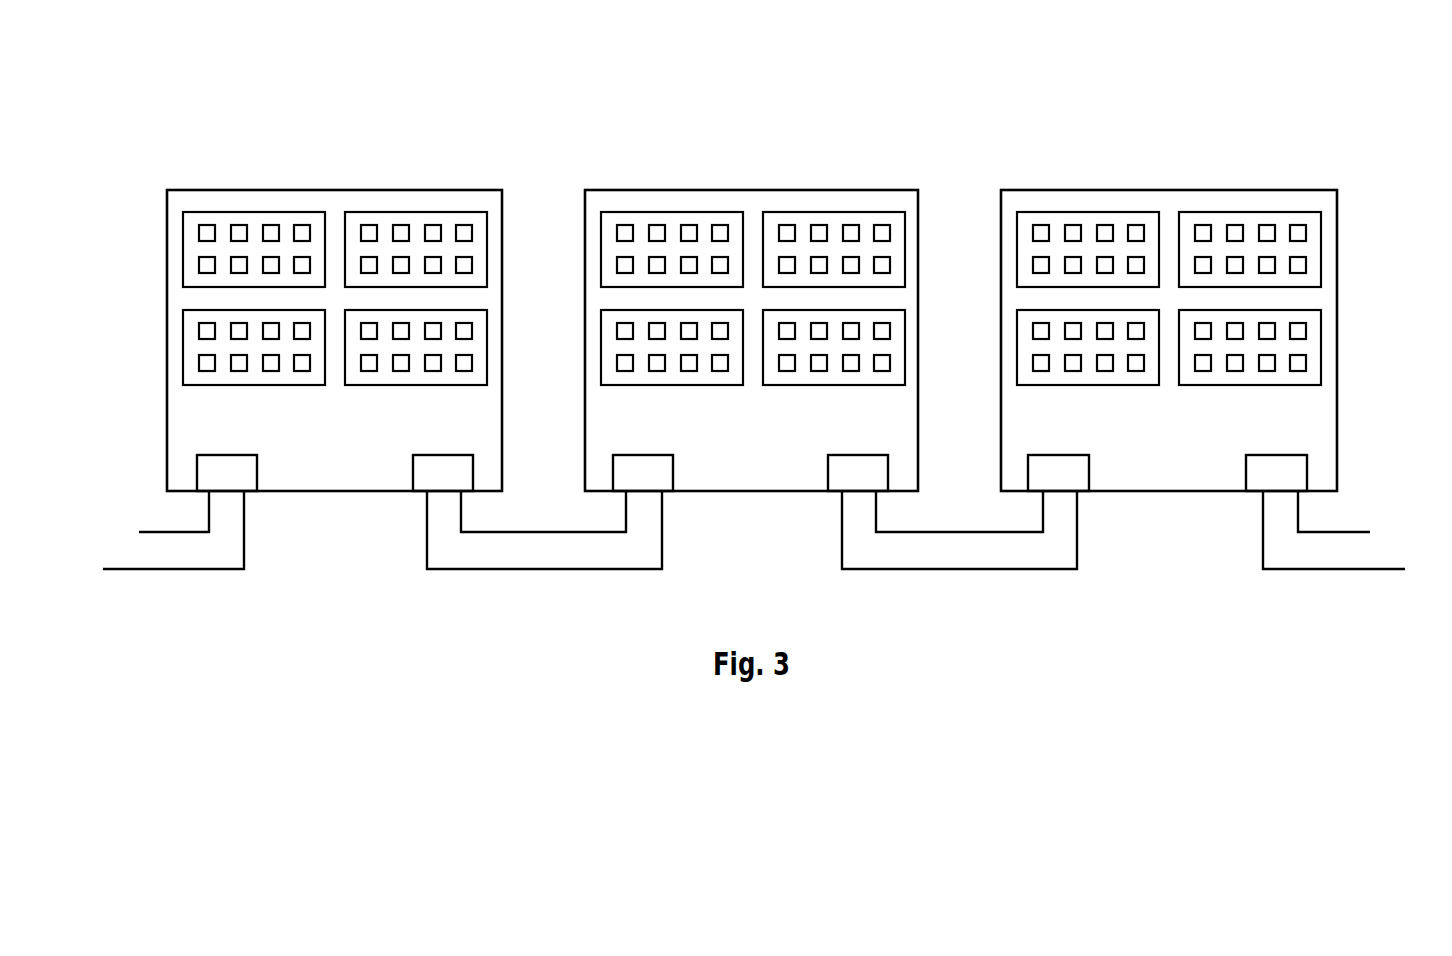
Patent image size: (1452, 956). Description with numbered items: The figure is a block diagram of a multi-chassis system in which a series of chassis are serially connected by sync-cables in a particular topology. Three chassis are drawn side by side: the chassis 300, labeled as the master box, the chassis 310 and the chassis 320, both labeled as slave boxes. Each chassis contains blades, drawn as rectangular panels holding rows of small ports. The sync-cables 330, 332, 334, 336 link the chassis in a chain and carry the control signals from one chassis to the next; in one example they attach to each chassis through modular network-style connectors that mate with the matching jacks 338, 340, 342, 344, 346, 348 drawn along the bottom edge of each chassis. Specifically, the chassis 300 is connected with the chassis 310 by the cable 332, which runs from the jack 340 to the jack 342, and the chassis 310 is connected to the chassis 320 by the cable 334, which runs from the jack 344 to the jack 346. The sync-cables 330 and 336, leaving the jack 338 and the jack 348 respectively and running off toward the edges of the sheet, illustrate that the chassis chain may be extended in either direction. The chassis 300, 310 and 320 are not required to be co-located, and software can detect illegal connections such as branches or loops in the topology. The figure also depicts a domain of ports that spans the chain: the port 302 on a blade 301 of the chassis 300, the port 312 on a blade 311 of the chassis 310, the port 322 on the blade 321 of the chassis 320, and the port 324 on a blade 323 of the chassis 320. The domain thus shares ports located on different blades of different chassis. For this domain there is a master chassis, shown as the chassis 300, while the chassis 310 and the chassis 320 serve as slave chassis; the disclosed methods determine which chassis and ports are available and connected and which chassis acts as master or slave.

The chassis 300 is at (215, 190).
The blade 301 is at (243, 385).
The port 302 is at (237, 371).
The chassis 310 is at (605, 190).
The blade 311 is at (683, 212).
The port 312 is at (650, 226).
The chassis 320 is at (1047, 190).
The blade 321 is at (1258, 212).
The port 322 is at (1233, 226).
The blade 323 is at (1307, 385).
The port 324 is at (1268, 371).
The sync-cable 330 is at (182, 570).
The sync-cable 332 is at (492, 570).
The sync-cable 334 is at (907, 570).
The sync-cable 336 is at (1317, 570).
The RJ-45 jack 338 is at (202, 468).
The RJ-45 jack 340 is at (423, 470).
The RJ-45 jack 342 is at (619, 468).
The RJ-45 jack 344 is at (838, 471).
The RJ-45 jack 346 is at (1035, 468).
The RJ-45 jack 348 is at (1255, 470).